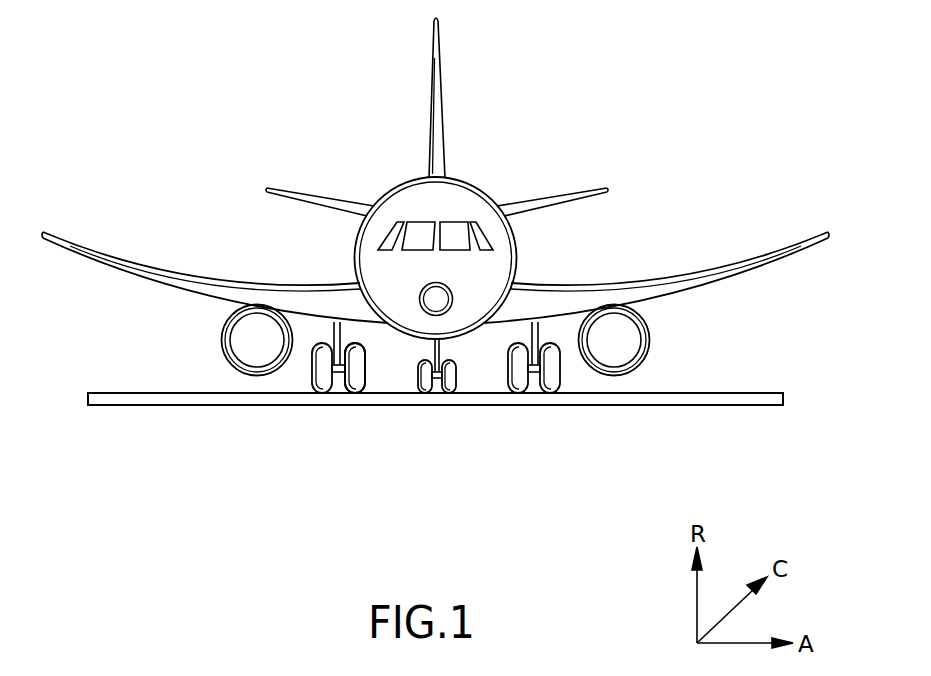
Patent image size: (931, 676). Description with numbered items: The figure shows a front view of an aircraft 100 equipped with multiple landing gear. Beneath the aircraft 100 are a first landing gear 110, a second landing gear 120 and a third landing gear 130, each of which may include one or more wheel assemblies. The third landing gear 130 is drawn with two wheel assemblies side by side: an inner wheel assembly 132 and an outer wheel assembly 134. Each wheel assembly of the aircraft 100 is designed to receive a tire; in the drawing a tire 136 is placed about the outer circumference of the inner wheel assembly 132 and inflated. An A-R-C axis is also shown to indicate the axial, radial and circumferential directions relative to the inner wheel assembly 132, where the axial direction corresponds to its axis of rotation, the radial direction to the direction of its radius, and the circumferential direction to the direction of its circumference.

The aircraft 100 is at (296, 99).
The first landing gear 110 is at (562, 379).
The second landing gear 120 is at (457, 379).
The third landing gear 130 is at (314, 427).
The inner wheel assembly 132 is at (357, 392).
The outer wheel assembly 134 is at (325, 390).
The tire 136 is at (354, 389).